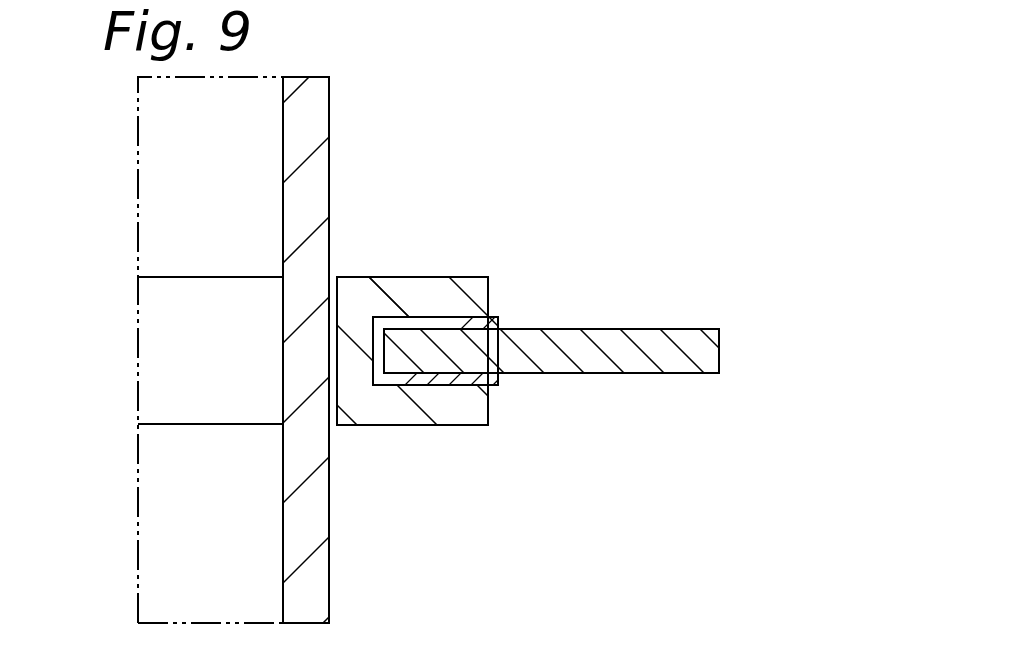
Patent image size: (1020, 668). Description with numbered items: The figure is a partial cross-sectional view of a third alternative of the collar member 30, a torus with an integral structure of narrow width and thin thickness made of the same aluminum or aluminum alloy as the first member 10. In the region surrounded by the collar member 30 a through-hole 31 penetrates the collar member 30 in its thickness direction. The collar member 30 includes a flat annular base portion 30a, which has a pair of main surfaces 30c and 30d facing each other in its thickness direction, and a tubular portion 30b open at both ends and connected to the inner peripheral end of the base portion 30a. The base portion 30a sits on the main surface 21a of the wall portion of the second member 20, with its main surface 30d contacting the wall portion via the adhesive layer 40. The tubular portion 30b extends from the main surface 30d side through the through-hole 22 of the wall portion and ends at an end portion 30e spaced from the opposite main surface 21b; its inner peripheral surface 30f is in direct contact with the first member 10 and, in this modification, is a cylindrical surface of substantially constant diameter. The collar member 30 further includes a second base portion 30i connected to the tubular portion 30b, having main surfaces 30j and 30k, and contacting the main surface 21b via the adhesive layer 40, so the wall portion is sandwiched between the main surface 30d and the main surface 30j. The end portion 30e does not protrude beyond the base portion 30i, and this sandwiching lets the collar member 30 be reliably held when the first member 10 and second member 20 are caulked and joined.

The first member 10 is at (330, 108).
The through-hole 31 is at (166, 293).
The collar member 30 is at (447, 277).
The base portion 30a is at (402, 292).
The tubular portion 30b is at (348, 367).
The main surface 30c is at (380, 277).
The main surface 30d is at (432, 324).
The end portion 30e is at (362, 407).
The inner peripheral surface 30f is at (337, 405).
The base portion 30i is at (478, 392).
The main surface 30j is at (482, 386).
The main surface 30k is at (463, 425).
The through-hole 22 is at (370, 387).
The adhesive layer 40 is at (498, 320).
The second member 20 is at (697, 328).
The main surface 21a is at (618, 328).
The main surface 21b is at (661, 373).